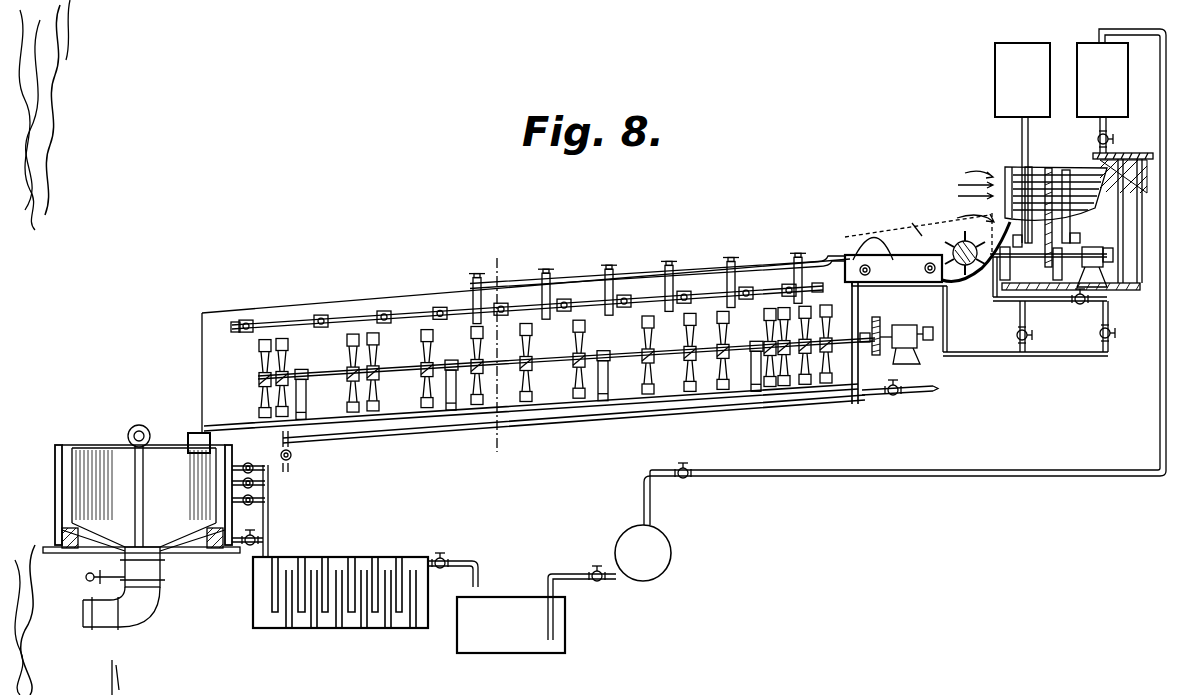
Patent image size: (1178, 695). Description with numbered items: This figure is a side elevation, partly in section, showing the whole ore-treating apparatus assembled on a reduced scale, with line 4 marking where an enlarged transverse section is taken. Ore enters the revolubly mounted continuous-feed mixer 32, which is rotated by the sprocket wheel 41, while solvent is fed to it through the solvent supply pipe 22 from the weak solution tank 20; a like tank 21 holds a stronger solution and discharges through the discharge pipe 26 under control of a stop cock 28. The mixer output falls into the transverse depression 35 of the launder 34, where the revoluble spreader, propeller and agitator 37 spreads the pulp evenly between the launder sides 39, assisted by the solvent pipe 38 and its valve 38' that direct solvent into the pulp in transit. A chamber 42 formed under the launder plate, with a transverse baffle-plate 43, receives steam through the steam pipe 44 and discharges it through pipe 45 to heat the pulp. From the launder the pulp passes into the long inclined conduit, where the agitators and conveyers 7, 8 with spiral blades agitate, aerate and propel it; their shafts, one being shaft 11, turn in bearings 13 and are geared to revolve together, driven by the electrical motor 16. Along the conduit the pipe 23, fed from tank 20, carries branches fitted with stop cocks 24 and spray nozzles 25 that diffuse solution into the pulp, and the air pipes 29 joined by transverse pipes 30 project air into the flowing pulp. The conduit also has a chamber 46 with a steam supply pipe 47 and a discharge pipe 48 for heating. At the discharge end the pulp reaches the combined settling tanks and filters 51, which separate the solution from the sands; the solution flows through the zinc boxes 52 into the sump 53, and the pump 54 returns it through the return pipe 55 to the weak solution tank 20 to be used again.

The section line 4 is at (505, 360).
The agitator and conveyer 7 is at (379, 382).
The agitator and conveyer 8 is at (352, 404).
The agitator shaft 11 is at (524, 356).
The bearing 13 is at (300, 370).
The electrical motor 16 is at (908, 322).
The weak solution tank 20 is at (1085, 45).
The strong solution tank 21 is at (1013, 45).
The solvent supply pipe 22 is at (1123, 209).
The pipe 23 is at (1108, 136).
The stop cock 24 is at (612, 267).
The spray nozzle 25 is at (603, 288).
The discharge pipe 26 is at (1068, 304).
The stop cock 28 is at (1014, 336).
The air pipe 29 is at (392, 311).
The transverse pipe 30 is at (249, 321).
The continuous-feed mixer 32 is at (1070, 176).
The launder 34 is at (873, 234).
The transverse depression 35 is at (968, 283).
The spreader, propeller and agitator 37 is at (919, 231).
The solvent pipe 38 is at (971, 250).
The valve 38' is at (1086, 331).
The launder side 39 is at (909, 221).
The sprocket wheel 41 is at (1043, 166).
The chamber 42 is at (879, 278).
The baffle-plate 43 is at (913, 266).
The steam pipe 44 is at (953, 283).
The discharge pipe 45 is at (822, 262).
The chamber 46 is at (588, 414).
The steam supply pipe 47 is at (900, 397).
The discharge pipe 48 is at (290, 478).
The combined settling tank and filter 51 is at (141, 527).
The zinc box 52 is at (365, 580).
The sump 53 is at (569, 622).
The pump 54 is at (712, 556).
The return pipe 55 is at (1025, 474).